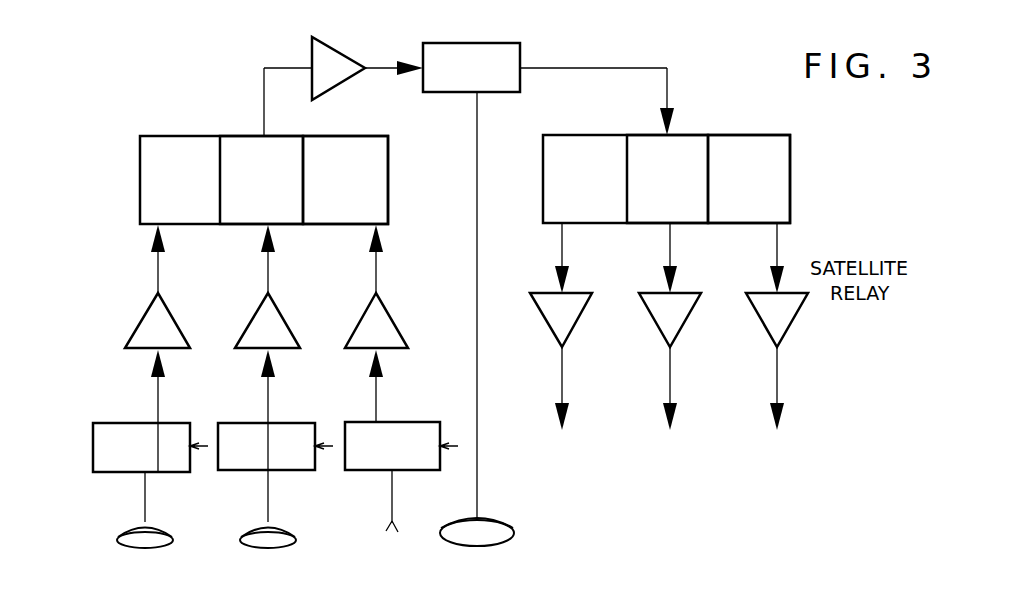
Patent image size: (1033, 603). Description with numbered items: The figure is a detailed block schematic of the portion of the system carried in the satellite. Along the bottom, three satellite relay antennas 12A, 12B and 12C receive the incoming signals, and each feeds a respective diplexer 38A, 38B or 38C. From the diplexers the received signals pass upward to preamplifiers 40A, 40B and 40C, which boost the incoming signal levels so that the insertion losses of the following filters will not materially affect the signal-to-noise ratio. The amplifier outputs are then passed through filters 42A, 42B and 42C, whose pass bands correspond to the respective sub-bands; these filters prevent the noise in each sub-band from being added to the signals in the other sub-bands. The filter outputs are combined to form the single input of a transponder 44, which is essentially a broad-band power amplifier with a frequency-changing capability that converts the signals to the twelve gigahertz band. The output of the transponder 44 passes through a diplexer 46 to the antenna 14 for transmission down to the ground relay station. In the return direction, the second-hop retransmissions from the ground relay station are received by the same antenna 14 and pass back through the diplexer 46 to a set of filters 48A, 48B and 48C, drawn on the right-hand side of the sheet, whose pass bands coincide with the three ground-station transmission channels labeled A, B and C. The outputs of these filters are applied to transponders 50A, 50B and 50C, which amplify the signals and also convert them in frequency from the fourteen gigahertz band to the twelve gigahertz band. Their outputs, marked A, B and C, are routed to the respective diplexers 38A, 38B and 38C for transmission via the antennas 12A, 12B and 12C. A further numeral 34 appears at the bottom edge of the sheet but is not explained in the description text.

The satellite relay antenna 12A is at (118, 550).
The satellite relay antenna 12B is at (262, 550).
The satellite relay antenna 12C is at (390, 528).
The satellite antenna 14 is at (473, 550).
The satellite relay link 34 is at (542, 602).
The diplexer 38A is at (105, 424).
The diplexer 38B is at (290, 471).
The diplexer 38C is at (400, 422).
The preamplifier 40A is at (152, 326).
The preamplifier 40B is at (260, 331).
The preamplifier 40C is at (376, 323).
The filter 42A is at (163, 157).
The filter 42B is at (238, 149).
The filter 42C is at (332, 151).
The transponder 44 is at (322, 52).
The diplexer 46 is at (494, 43).
The filter 48A is at (567, 152).
The filter 48B is at (684, 149).
The filter 48C is at (752, 152).
The transponder 50A is at (580, 315).
The transponder 50B is at (685, 325).
The transponder 50C is at (790, 325).